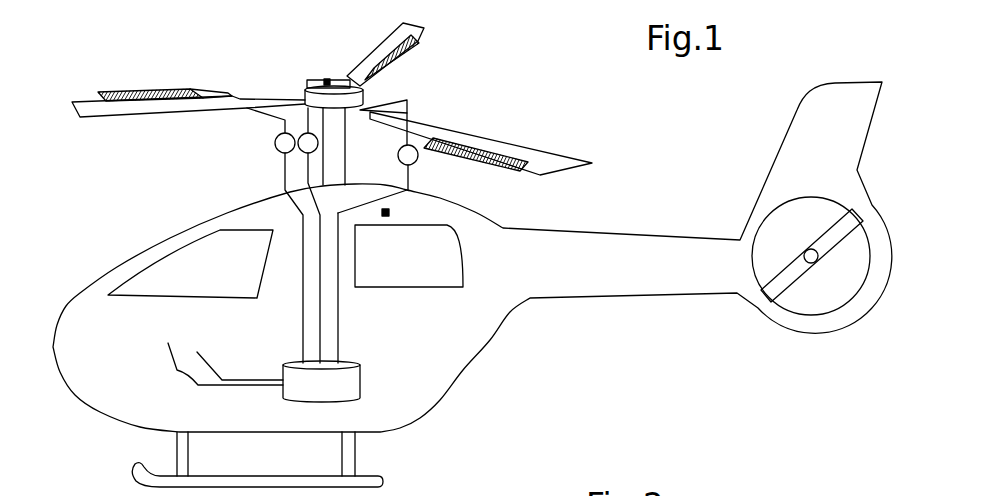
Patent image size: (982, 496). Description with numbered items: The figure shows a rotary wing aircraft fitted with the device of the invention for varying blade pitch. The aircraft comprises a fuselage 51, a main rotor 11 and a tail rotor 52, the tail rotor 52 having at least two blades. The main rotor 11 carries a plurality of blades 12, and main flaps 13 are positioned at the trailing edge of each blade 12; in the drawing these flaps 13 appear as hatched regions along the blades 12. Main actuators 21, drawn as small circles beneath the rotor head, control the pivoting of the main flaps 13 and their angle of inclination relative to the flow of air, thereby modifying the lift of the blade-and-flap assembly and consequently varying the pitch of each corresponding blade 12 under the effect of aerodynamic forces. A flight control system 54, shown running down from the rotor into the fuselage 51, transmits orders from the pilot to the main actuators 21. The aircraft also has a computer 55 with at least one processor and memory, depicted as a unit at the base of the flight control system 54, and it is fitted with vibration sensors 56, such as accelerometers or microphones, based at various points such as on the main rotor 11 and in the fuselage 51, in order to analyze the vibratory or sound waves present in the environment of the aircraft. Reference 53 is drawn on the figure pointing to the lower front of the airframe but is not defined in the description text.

The main rotor 11 is at (296, 65).
The blades 12 is at (569, 152).
The main flaps 13 is at (459, 140).
The main actuators 21 is at (265, 144).
The fuselage 51 is at (111, 312).
The tail rotor 52 is at (810, 192).
The fuselage 53 is at (80, 430).
The flight control system 54 is at (346, 321).
The computer 55 is at (366, 377).
The vibration sensors 56 is at (327, 79).